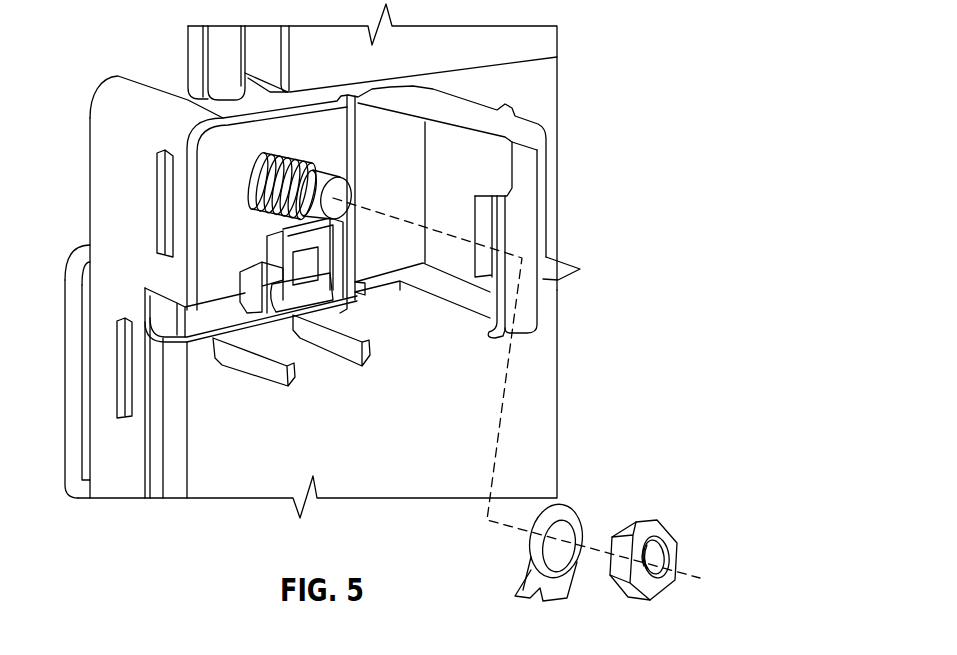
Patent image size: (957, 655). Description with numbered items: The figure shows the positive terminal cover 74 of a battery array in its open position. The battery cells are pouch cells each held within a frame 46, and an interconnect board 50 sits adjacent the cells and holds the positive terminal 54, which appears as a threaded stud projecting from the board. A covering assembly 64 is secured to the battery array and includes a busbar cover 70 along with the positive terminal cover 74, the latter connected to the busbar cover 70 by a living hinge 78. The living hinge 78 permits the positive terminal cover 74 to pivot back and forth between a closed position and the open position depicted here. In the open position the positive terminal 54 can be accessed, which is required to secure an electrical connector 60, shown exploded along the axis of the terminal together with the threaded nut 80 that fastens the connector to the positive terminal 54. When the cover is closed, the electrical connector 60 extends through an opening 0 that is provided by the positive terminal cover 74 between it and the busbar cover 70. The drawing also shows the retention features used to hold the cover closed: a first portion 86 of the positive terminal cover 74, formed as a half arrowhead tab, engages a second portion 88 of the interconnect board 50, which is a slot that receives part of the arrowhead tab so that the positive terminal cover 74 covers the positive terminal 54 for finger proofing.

The frame 46 is at (537, 42).
The interconnect board 50 is at (107, 160).
The positive terminal 54 is at (290, 152).
The electrical connector 60 is at (557, 508).
The covering assembly 64 is at (533, 395).
The busbar cover 70 is at (218, 478).
The positive terminal cover 74 is at (528, 203).
The living hinge 78 is at (409, 150).
The threaded nut 80 is at (654, 523).
The first portion 86 is at (503, 257).
The second portion 88 is at (157, 153).
The opening 0 is at (460, 391).